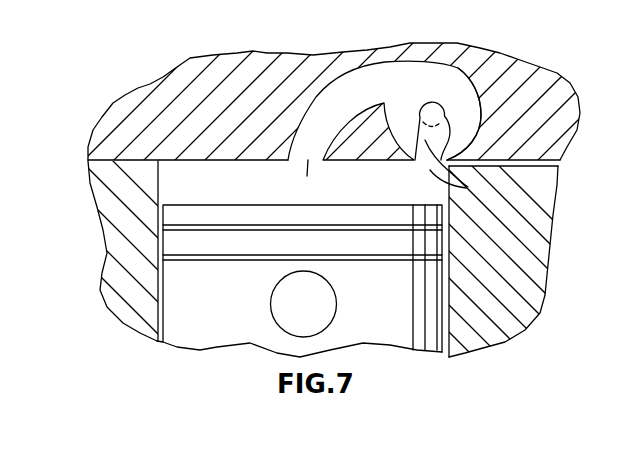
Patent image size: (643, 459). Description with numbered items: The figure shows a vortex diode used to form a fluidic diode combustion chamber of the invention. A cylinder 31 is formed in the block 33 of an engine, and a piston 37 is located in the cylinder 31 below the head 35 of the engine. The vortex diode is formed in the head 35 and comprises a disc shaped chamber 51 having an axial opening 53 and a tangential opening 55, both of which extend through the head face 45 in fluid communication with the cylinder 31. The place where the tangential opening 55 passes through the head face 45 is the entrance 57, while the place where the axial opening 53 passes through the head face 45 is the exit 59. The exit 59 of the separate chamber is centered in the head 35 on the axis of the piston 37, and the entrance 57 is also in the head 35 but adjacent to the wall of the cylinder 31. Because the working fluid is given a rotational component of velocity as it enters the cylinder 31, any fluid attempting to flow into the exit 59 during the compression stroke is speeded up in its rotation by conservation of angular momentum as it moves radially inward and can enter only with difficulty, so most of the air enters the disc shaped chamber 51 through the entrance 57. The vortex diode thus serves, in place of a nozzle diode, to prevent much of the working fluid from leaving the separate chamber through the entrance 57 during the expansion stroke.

The cylinder 31 is at (158, 190).
The block 33 is at (515, 283).
The head 35 is at (174, 104).
The piston 37 is at (407, 327).
The head face 45 is at (187, 161).
The disc shaped chamber 51 is at (482, 92).
The axial opening 53 is at (450, 137).
The tangential opening 55 is at (343, 81).
The entrance 57 is at (466, 176).
The exit 59 is at (308, 158).